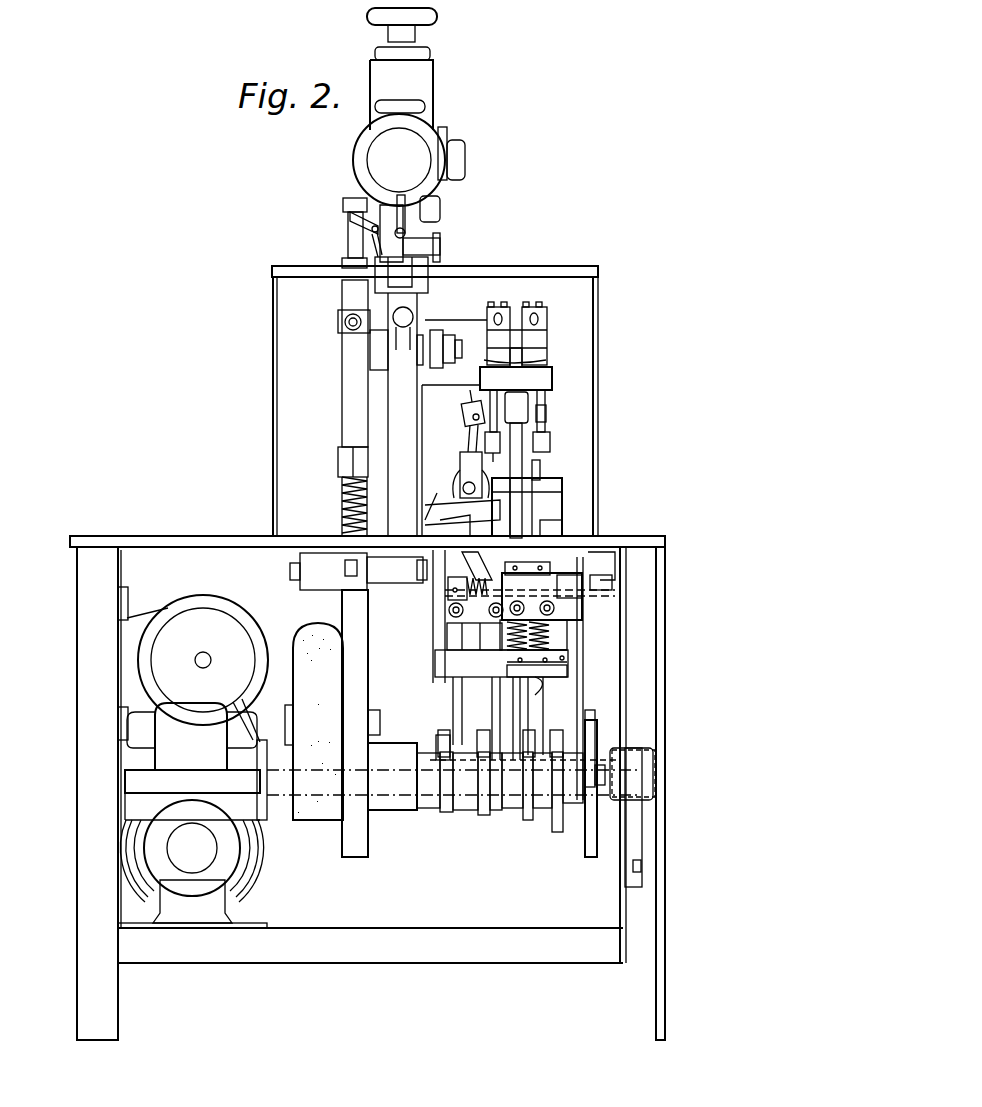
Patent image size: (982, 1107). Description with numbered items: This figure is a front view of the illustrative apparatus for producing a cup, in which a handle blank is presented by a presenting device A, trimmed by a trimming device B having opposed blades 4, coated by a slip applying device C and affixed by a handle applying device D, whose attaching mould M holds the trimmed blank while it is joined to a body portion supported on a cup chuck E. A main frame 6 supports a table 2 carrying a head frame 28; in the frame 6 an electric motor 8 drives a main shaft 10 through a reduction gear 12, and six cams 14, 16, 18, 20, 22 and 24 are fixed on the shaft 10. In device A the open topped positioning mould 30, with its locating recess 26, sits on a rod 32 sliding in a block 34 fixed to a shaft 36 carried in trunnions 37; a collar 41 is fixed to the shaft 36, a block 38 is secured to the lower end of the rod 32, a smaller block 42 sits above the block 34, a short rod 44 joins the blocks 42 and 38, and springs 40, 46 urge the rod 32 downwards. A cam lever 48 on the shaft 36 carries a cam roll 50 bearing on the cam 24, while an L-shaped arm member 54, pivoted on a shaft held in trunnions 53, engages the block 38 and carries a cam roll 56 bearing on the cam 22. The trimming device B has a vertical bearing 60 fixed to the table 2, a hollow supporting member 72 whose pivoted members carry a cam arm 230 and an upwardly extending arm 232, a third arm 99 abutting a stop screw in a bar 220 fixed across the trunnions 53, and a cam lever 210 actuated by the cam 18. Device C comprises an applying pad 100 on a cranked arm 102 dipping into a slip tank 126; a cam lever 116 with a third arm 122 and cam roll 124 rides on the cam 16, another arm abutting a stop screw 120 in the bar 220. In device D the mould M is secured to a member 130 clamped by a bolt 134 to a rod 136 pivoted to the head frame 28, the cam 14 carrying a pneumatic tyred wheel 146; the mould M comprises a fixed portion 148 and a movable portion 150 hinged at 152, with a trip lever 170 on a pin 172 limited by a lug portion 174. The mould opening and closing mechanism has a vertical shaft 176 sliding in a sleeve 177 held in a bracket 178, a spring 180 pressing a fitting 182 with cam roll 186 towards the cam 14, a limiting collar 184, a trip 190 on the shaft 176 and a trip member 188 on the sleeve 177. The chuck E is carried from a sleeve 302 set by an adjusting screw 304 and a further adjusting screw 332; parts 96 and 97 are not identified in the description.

The table 2 is at (630, 542).
The opposed blades 4 is at (490, 357).
The main frame 6 is at (78, 895).
The electric motor 8 is at (195, 643).
The main shaft 10 is at (285, 793).
The reduction gear 12 is at (135, 757).
The cam 14 is at (394, 811).
The cam 16 is at (434, 811).
The cam 18 is at (471, 811).
The cam 20 is at (513, 811).
The cam 22 is at (544, 811).
The cam 24 is at (576, 811).
The recess 26 is at (548, 362).
The head frame 28 is at (584, 484).
The open topped positioning mould 30 is at (480, 378).
The rod 32 is at (522, 440).
The block 34 is at (575, 600).
The shaft 36 is at (615, 592).
The trunnions 37 is at (605, 558).
The block 38 is at (570, 663).
The spring 40 is at (505, 630).
The collar 41 is at (452, 600).
The smaller block 42 is at (612, 580).
The second short rod 44 is at (555, 645).
The spring 46 is at (552, 630).
The cam lever 48 is at (438, 648).
The cam roll 50 is at (602, 780).
The trunnions 53 is at (575, 680).
The L-shaped arm member 54 is at (532, 690).
The cam roll 56 is at (543, 727).
The vertical bearing 60 is at (545, 506).
The hollow supporting member 72 is at (540, 470).
The rod 96 is at (509, 718).
The plate 97 is at (480, 568).
The third arm 99 is at (476, 598).
The applying pad 100 is at (463, 410).
The cranked arm 102 is at (462, 450).
The cam lever 116 is at (453, 690).
The stop screw 120 is at (450, 615).
The third arm 122 is at (455, 712).
The cam roll 124 is at (448, 737).
The tank 126 is at (430, 515).
The member 130 is at (417, 303).
The bolt 134 is at (424, 328).
The rod 136 is at (393, 314).
The pneumatic tyred wheel 146 is at (314, 721).
The fixed mould portion 148 is at (420, 250).
The movable mould portion 150 is at (440, 245).
The hinge 152 is at (406, 233).
The trip lever 170 is at (360, 218).
The pin 172 is at (372, 229).
The lug portion 174 is at (375, 244).
The vertical shaft 176 is at (345, 505).
The sleeve 177 is at (342, 292).
The bracket 178 is at (338, 460).
The spring 180 is at (342, 485).
The fitting 182 is at (340, 565).
The collar 184 is at (342, 263).
The cam roll 186 is at (345, 570).
The trip member 188 is at (338, 320).
The trip 190 is at (343, 203).
The cam lever 210 is at (492, 703).
The bar 220 is at (565, 617).
The cam arm 230 is at (545, 405).
The upwardly extending arm 232 is at (490, 400).
The sleeve 302 is at (433, 76).
The adjusting screw 304 is at (437, 16).
The adjusting screw 332 is at (425, 107).
The presenting device A is at (580, 378).
The trimming device B is at (585, 331).
The slip applying device C is at (462, 413).
The handle applying device D is at (490, 252).
The cup chuck E is at (475, 153).
The attaching mould M is at (462, 204).